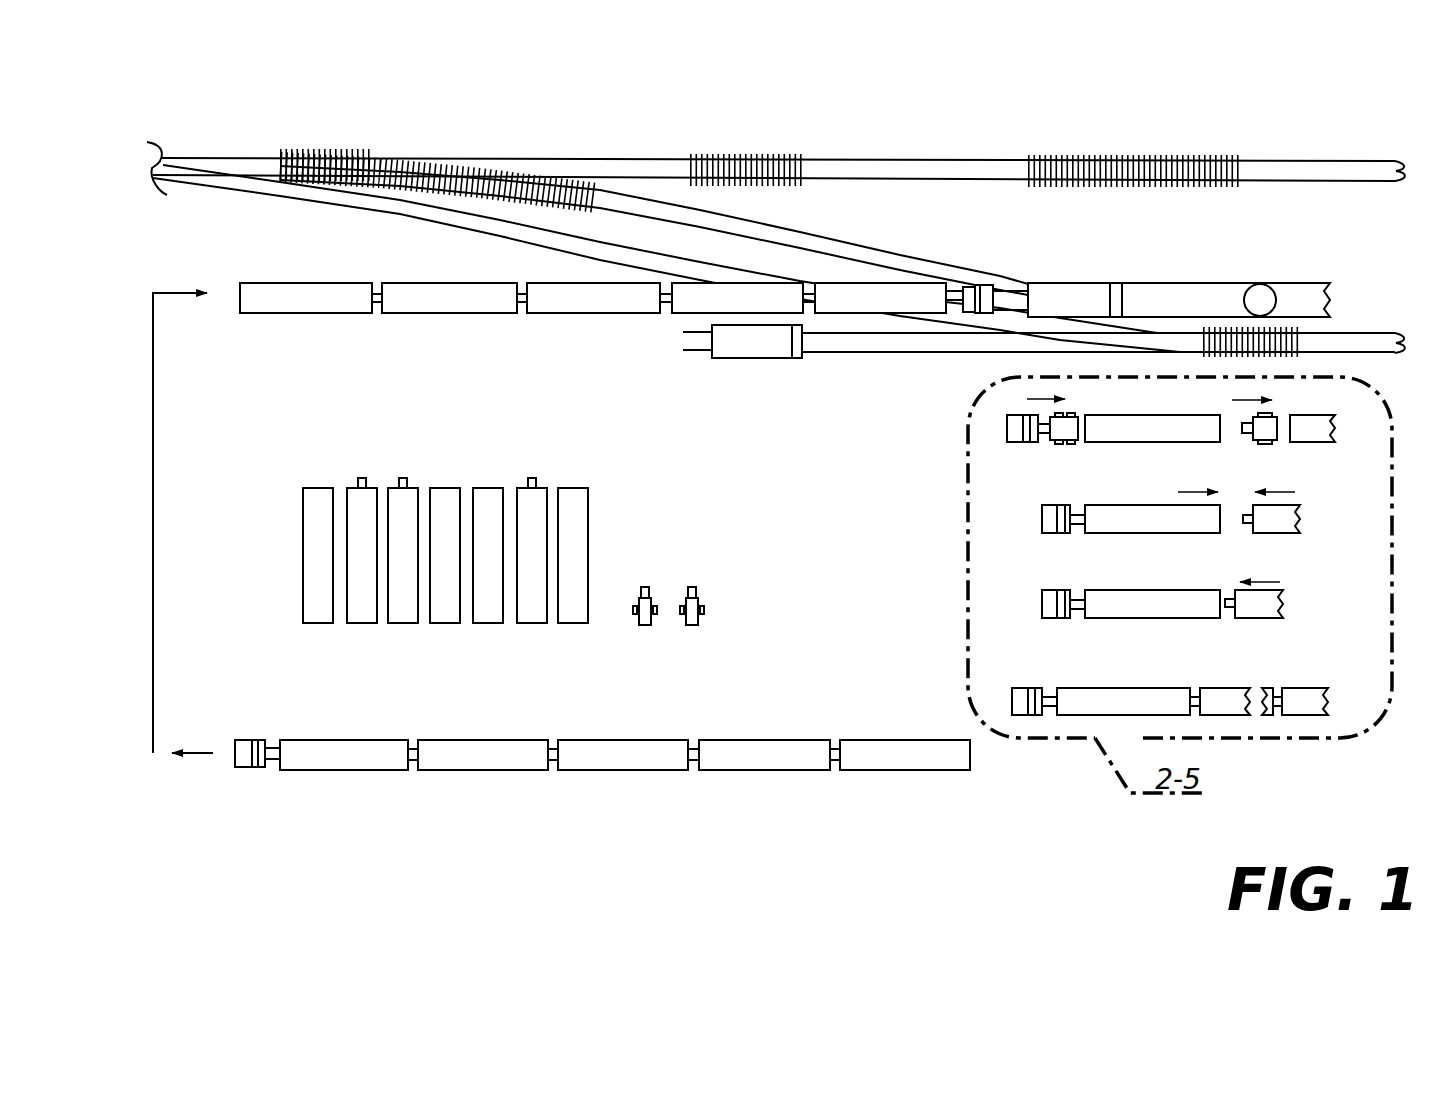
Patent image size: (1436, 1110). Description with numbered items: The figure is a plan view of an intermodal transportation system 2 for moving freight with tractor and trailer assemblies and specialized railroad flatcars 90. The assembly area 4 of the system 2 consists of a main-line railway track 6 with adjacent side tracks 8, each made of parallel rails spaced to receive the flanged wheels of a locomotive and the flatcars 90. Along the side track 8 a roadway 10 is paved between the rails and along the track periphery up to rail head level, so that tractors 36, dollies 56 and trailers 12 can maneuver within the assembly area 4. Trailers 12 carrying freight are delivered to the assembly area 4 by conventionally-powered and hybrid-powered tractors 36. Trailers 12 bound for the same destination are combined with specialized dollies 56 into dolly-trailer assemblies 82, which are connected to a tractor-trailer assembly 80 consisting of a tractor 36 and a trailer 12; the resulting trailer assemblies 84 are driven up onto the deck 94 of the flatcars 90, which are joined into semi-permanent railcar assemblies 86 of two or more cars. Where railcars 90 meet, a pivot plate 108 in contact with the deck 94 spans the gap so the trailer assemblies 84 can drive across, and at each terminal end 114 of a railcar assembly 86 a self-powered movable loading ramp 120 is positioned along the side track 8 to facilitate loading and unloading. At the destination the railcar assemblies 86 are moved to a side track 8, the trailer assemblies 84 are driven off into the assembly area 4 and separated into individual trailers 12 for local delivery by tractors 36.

The intermodal transportation system 2 is at (345, 112).
The assembly area 4 is at (813, 525).
The main-line railway track 6 is at (652, 160).
The side track 8 is at (452, 226).
The roadway 10 is at (560, 381).
The trailer 12 is at (273, 322).
The tractor 36 is at (985, 268).
The dolly 56 is at (375, 317).
The tractor-trailer assembly 80 is at (1100, 546).
The dolly-trailer assembly 82 is at (350, 476).
The trailer assembly 84 is at (492, 348).
The railcar assembly 86 is at (1224, 266).
The railroad flatcar 90 is at (1168, 270).
The deck 94 is at (1202, 314).
The pivot plate 108 is at (1258, 290).
The terminal end 114 is at (1117, 283).
The powered loading ramp 120 is at (1070, 277).